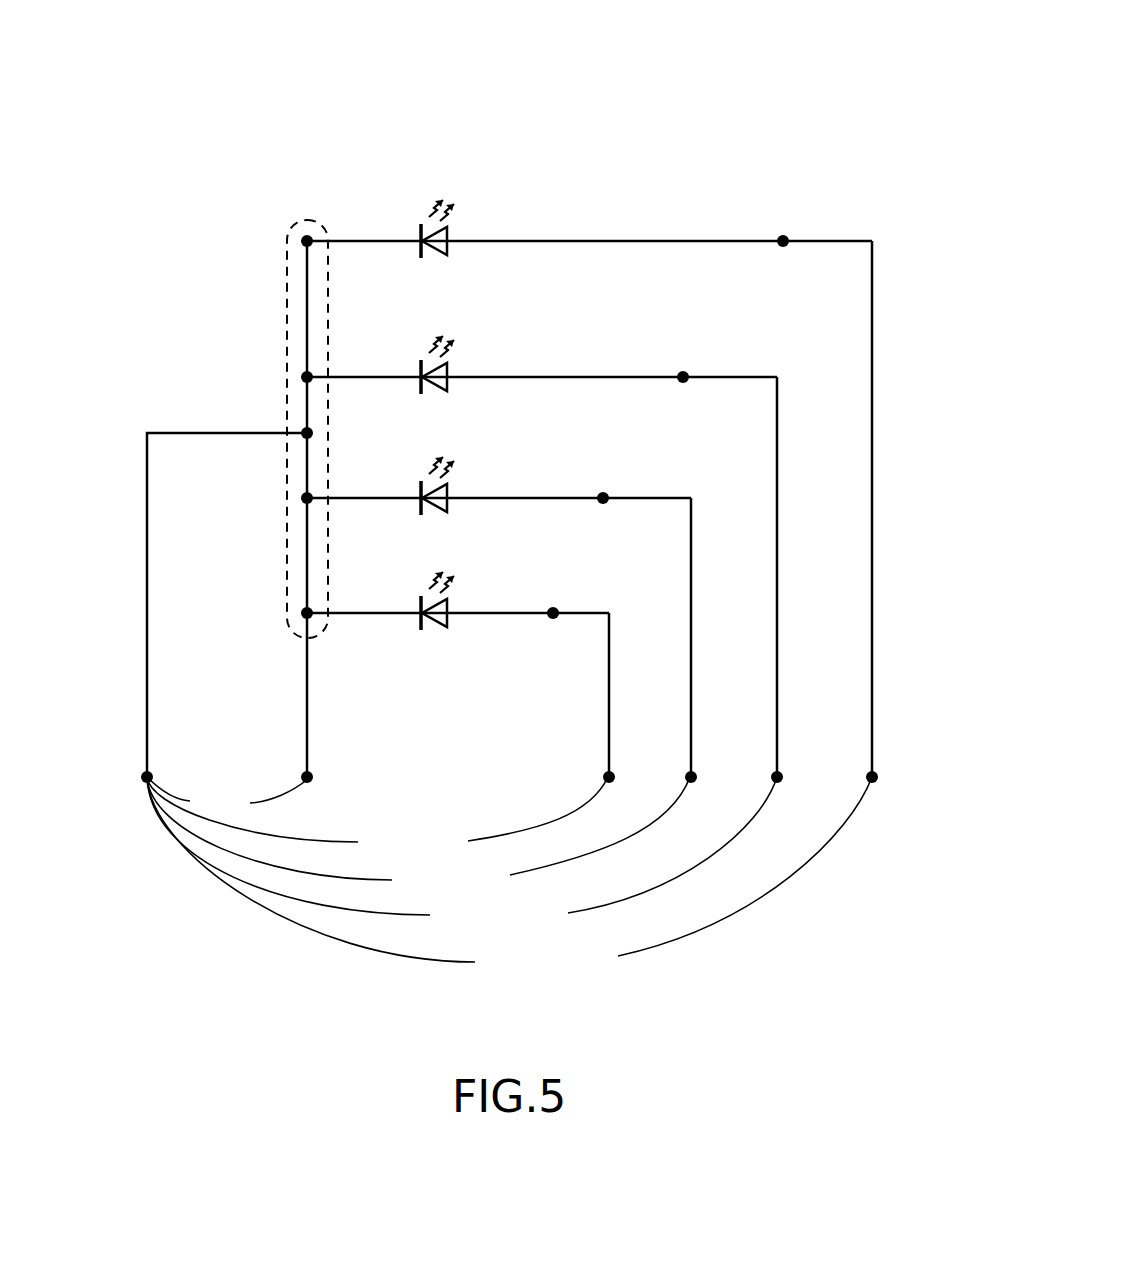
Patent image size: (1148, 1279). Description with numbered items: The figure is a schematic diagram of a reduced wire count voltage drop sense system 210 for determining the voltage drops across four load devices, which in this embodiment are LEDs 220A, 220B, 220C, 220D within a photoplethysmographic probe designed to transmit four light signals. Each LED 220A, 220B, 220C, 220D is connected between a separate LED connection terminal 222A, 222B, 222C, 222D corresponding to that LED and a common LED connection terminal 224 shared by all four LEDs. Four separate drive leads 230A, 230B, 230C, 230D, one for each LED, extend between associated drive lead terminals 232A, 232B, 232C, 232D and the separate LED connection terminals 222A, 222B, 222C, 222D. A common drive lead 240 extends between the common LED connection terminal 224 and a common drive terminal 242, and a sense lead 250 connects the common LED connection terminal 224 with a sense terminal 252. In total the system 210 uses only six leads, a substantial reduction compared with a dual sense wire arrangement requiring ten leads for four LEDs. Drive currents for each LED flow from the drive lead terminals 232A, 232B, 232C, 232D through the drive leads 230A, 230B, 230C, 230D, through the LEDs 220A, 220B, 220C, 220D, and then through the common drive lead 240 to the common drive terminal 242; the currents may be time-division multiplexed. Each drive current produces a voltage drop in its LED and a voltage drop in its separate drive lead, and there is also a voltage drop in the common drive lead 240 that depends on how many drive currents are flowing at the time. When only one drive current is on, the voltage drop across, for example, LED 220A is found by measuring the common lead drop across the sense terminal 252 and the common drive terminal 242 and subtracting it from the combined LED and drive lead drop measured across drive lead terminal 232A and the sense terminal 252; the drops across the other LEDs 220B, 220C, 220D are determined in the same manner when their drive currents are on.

The reduced wire count voltage drop sense system 210 is at (733, 132).
The common LED connection terminal 224 is at (287, 308).
The LED 220A is at (449, 605).
The LED 220B is at (449, 490).
The LED 220C is at (449, 369).
The LED 220D is at (449, 233).
The LED connection terminal 222A is at (558, 608).
The LED connection terminal 222B is at (608, 493).
The LED connection terminal 222C is at (688, 372).
The LED connection terminal 222D is at (788, 236).
The drive lead 230A is at (609, 692).
The drive lead 230B is at (691, 610).
The drive lead 230C is at (777, 518).
The drive lead 230D is at (872, 428).
The drive lead terminal 232A is at (604, 775).
The drive lead terminal 232B is at (696, 773).
The drive lead terminal 232C is at (782, 773).
The drive lead terminal 232D is at (878, 776).
The common drive lead 240 is at (308, 693).
The common drive terminal 242 is at (313, 777).
The sense lead 250 is at (147, 582).
The sense terminal 252 is at (147, 776).